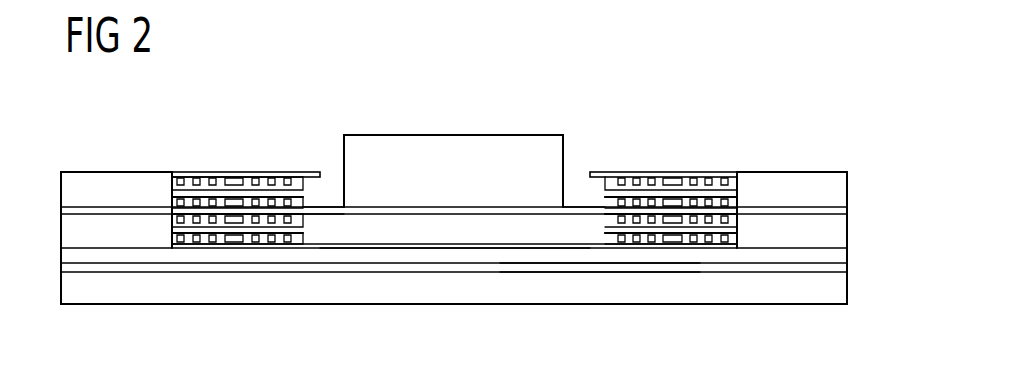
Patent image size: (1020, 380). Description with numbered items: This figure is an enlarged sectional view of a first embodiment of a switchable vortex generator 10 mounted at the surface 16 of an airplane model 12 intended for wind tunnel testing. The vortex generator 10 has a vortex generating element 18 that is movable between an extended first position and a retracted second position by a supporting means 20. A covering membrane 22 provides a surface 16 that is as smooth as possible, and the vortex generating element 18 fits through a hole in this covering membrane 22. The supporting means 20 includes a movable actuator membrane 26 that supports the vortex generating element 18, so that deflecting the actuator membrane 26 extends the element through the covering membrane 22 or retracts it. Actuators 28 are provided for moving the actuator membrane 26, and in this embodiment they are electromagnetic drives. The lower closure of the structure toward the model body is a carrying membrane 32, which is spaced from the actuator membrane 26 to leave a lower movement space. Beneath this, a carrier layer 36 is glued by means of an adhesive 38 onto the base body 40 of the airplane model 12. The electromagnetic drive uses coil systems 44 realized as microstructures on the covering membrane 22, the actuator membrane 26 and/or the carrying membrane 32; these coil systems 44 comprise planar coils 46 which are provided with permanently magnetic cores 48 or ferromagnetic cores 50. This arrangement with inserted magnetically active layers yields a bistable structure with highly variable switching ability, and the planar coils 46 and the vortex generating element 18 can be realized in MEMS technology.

The vortex generator 10 is at (453, 122).
The airplane model 12 is at (654, 284).
The surface 16 is at (813, 170).
The vortex generating element 18 is at (455, 152).
The supporting means 20 is at (573, 198).
The covering membrane 22 is at (682, 173).
The actuator membrane 26 is at (330, 210).
The actuators 28 is at (713, 135).
The carrying membrane 32 is at (423, 245).
The carrier layer 36 is at (383, 255).
The adhesive 38 is at (573, 268).
The base body 40 is at (618, 287).
The coil systems 44 is at (453, 176).
The planar coils 46 is at (197, 180).
The permanently magnetic cores 48 is at (228, 168).
The ferromagnetic cores 50 is at (242, 222).